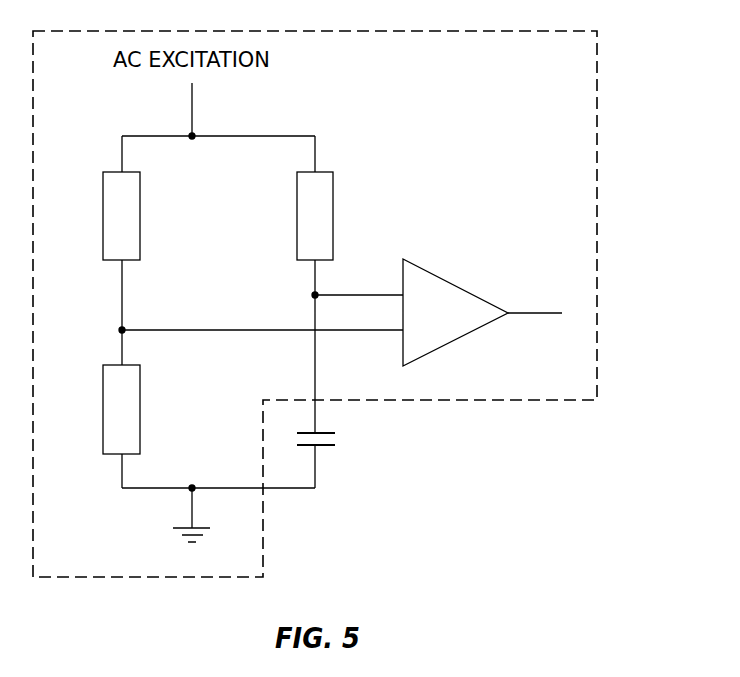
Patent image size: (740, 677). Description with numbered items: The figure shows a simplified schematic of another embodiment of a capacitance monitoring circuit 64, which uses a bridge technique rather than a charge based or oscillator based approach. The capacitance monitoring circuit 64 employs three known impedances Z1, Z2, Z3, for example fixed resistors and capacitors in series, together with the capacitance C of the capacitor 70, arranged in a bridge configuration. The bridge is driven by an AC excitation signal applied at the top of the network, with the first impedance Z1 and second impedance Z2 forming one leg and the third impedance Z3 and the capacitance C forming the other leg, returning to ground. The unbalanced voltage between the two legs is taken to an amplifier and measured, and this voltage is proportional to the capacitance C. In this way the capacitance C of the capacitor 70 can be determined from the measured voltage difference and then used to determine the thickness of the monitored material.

The capacitance monitoring circuit 64 is at (598, 123).
The capacitor 70 is at (357, 472).
The known impedance Z1 is at (105, 216).
The known impedance Z2 is at (105, 409).
The known impedance Z3 is at (332, 216).
The capacitance C is at (329, 455).